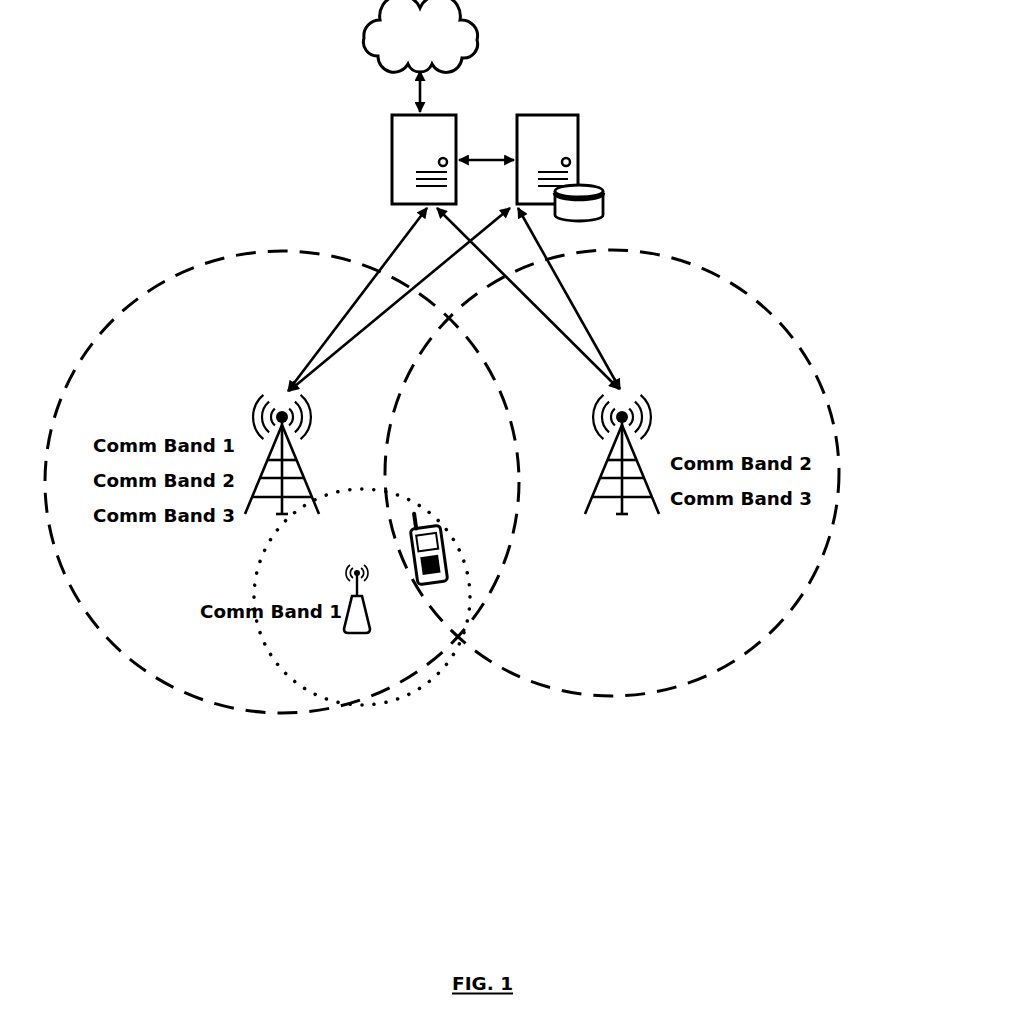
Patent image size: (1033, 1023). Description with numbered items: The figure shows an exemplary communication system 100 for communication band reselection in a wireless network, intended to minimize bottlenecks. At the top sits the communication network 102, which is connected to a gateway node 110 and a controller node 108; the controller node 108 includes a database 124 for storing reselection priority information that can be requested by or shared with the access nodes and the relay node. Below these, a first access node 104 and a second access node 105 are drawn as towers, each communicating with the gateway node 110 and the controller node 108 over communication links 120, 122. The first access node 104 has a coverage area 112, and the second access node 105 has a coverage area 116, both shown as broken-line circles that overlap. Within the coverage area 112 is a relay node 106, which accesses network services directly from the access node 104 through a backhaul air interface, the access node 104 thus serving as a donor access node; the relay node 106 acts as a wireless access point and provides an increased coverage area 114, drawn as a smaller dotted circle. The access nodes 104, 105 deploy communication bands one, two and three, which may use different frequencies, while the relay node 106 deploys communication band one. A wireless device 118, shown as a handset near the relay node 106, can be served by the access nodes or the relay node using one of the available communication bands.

The communication system 100 is at (526, 50).
The communication network 102 is at (405, 44).
The first access node 104 is at (240, 397).
The second access node 105 is at (570, 393).
The relay node 106 is at (360, 633).
The controller node 108 is at (578, 130).
The gateway node 110 is at (390, 135).
The coverage area 112 is at (165, 270).
The increased coverage area 114 is at (240, 567).
The coverage area 116 is at (745, 288).
The wireless device 118 is at (430, 522).
The communication link 120 is at (380, 253).
The communication link 122 is at (332, 362).
The database 124 is at (603, 185).